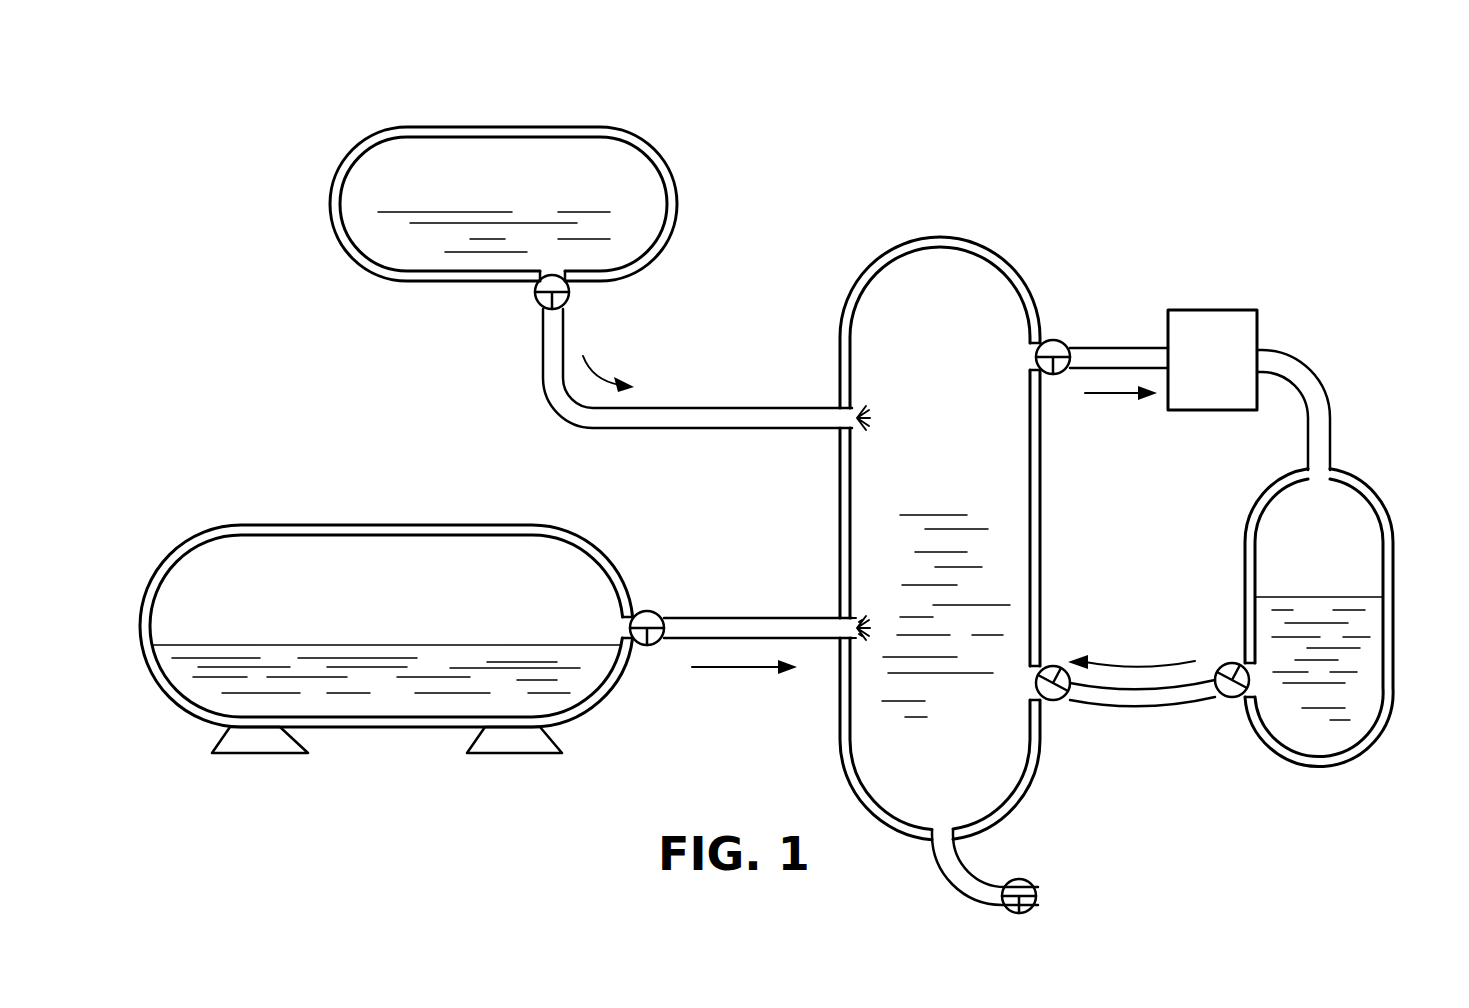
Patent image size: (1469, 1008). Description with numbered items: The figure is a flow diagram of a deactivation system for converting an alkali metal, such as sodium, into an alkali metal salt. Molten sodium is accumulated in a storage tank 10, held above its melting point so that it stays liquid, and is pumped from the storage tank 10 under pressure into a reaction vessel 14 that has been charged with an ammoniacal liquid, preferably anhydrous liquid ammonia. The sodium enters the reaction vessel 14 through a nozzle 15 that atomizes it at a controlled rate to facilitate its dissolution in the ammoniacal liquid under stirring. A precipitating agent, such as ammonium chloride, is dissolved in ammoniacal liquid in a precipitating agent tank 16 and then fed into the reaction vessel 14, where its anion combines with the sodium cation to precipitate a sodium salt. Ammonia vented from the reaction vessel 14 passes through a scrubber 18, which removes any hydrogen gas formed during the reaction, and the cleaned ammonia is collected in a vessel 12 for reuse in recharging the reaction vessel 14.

The storage tank 10 is at (190, 682).
The vessel 12 is at (1380, 556).
The reaction vessel 14 is at (893, 250).
The nozzle 15 is at (843, 613).
The precipitating agent tank 16 is at (548, 160).
The scrubber 18 is at (1235, 332).